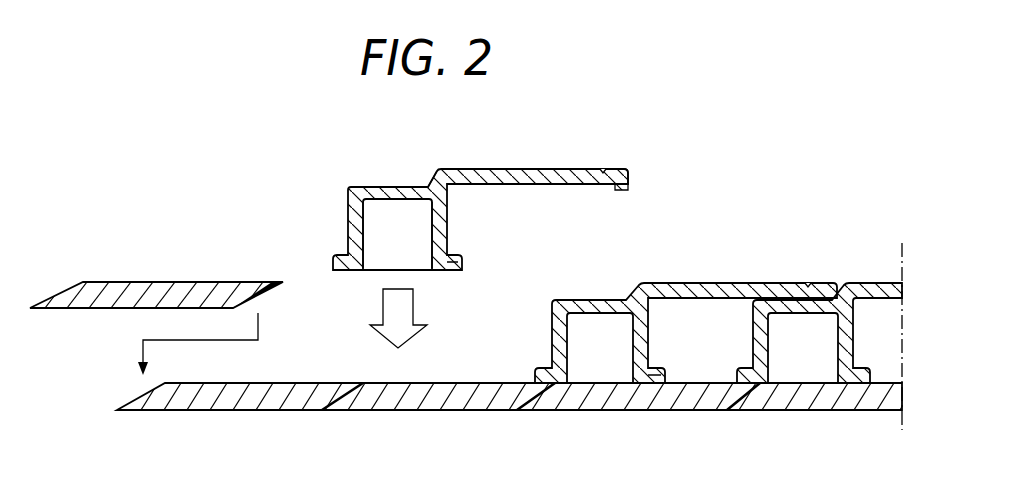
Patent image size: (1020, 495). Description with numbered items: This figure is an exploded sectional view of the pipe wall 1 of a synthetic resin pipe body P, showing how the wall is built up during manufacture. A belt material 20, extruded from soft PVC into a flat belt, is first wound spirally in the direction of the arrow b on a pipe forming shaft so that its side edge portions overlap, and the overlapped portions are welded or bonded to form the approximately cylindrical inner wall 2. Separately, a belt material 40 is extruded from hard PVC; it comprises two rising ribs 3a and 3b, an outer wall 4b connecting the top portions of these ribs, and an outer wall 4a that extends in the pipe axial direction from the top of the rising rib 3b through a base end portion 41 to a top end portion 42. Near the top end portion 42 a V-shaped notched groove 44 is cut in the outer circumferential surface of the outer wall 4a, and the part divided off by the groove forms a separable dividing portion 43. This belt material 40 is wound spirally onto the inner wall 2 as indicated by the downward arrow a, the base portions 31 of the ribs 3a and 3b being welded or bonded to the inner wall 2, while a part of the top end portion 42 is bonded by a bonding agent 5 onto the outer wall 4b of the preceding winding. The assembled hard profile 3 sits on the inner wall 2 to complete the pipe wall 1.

The pipe wall 1 is at (697, 324).
The inner wall 2 is at (600, 395).
The channel member 3 is at (553, 346).
The rising rib 3a is at (348, 240).
The rising rib 3b is at (447, 233).
The base portion 31 is at (458, 262).
The belt material 40 is at (369, 177).
The outer wall 4a is at (545, 168).
The outer wall 4b is at (403, 186).
The base end portion 41 is at (481, 168).
The top end portion 42 is at (624, 170).
The dividing portion 43 is at (604, 186).
The notched groove 44 is at (603, 168).
The bonding agent 5 is at (623, 190).
The belt material 20 is at (165, 281).
The pipe body P is at (808, 253).
The arrow a is at (408, 306).
The arrow b is at (258, 318).